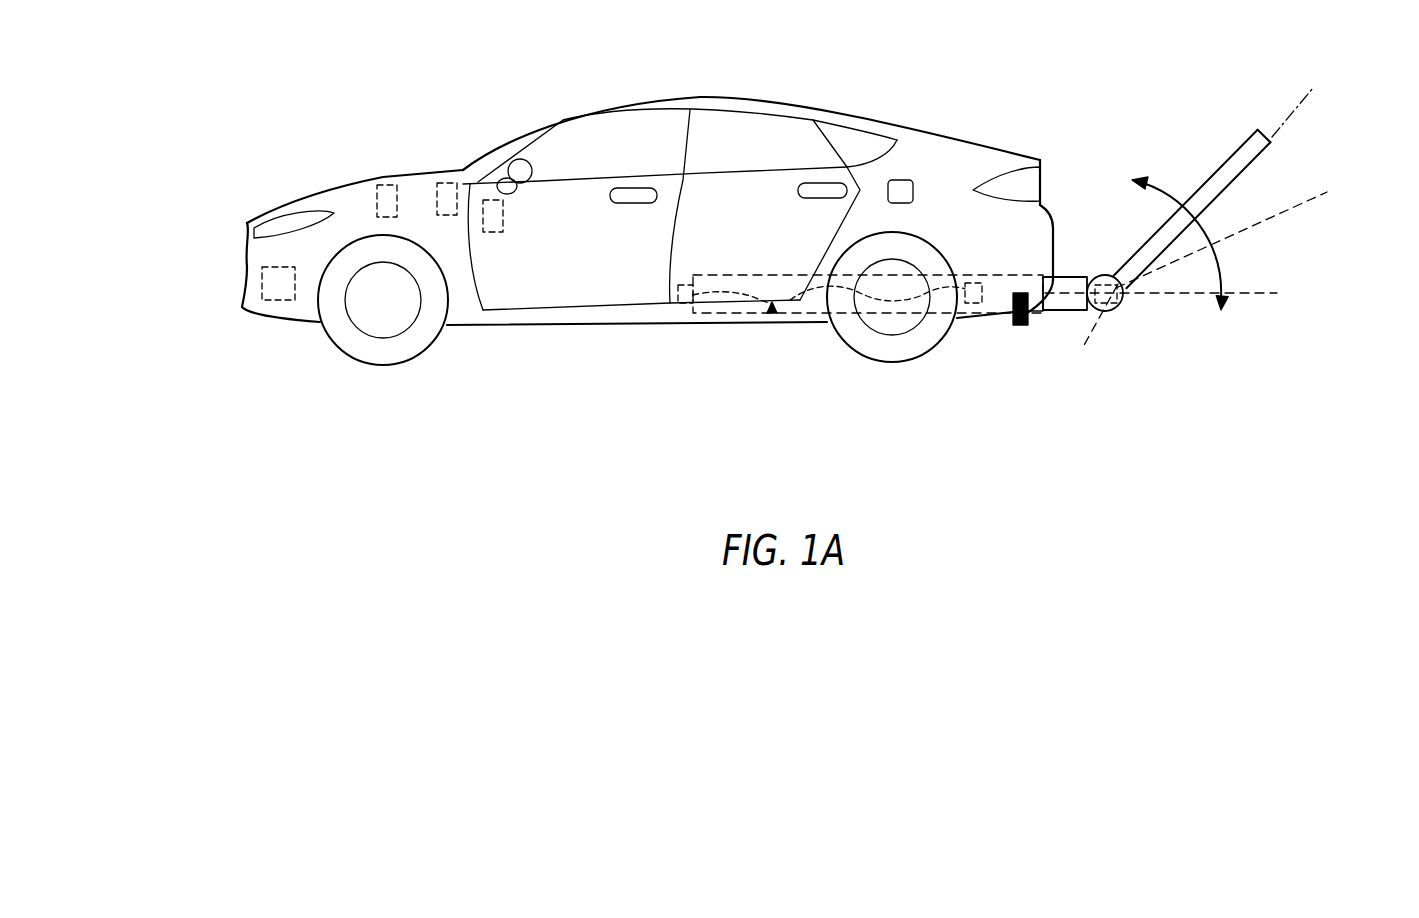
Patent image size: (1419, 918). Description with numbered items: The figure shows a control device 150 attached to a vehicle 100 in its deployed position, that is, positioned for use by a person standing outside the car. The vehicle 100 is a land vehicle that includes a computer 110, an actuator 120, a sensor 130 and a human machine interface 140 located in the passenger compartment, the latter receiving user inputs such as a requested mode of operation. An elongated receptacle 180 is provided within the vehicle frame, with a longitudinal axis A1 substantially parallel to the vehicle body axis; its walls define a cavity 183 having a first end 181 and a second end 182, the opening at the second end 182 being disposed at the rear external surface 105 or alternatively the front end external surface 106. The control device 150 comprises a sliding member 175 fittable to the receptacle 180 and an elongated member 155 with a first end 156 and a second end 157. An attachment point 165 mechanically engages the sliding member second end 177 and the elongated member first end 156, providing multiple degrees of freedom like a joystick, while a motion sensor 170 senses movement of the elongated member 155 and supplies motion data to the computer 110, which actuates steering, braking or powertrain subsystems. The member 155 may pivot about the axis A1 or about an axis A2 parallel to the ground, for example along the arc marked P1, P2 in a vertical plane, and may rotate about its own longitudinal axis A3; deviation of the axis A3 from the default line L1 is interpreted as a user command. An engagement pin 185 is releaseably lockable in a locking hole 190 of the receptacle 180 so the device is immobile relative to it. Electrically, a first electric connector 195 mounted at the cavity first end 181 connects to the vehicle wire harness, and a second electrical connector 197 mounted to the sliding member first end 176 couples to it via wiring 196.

The vehicle 100 is at (729, 88).
The external surface 105 is at (1048, 282).
The front end external surface 106 is at (243, 262).
The computer 110 is at (445, 181).
The actuator 120 is at (380, 183).
The sensor 130 is at (277, 302).
The human machine interface 140 is at (490, 198).
The control device 150 is at (1199, 170).
The elongated member 155 is at (1234, 186).
The first end 156 is at (1113, 276).
The second end 157 is at (1260, 128).
The attachment point 165 is at (1124, 297).
The motion sensor 170 is at (1124, 311).
The sliding member 175 is at (1048, 312).
The first end 176 is at (968, 283).
The second end 177 is at (1087, 278).
The receptacle 180 is at (790, 302).
The first end 181 is at (693, 275).
The second end 182 is at (1040, 274).
The cavity 183 is at (771, 316).
The engagement pin 185 is at (1023, 327).
The locking hole 190 is at (1017, 338).
The first electric connector 195 is at (682, 304).
The wiring 196 is at (737, 295).
The second electrical connector 197 is at (973, 305).
The longitudinal axis A1 is at (1267, 296).
The axis A2 is at (1085, 343).
The longitudinal axis A3 is at (1313, 90).
The line L1 is at (1308, 199).
The arc position P1 is at (1187, 266).
The arc position P2 is at (1142, 167).